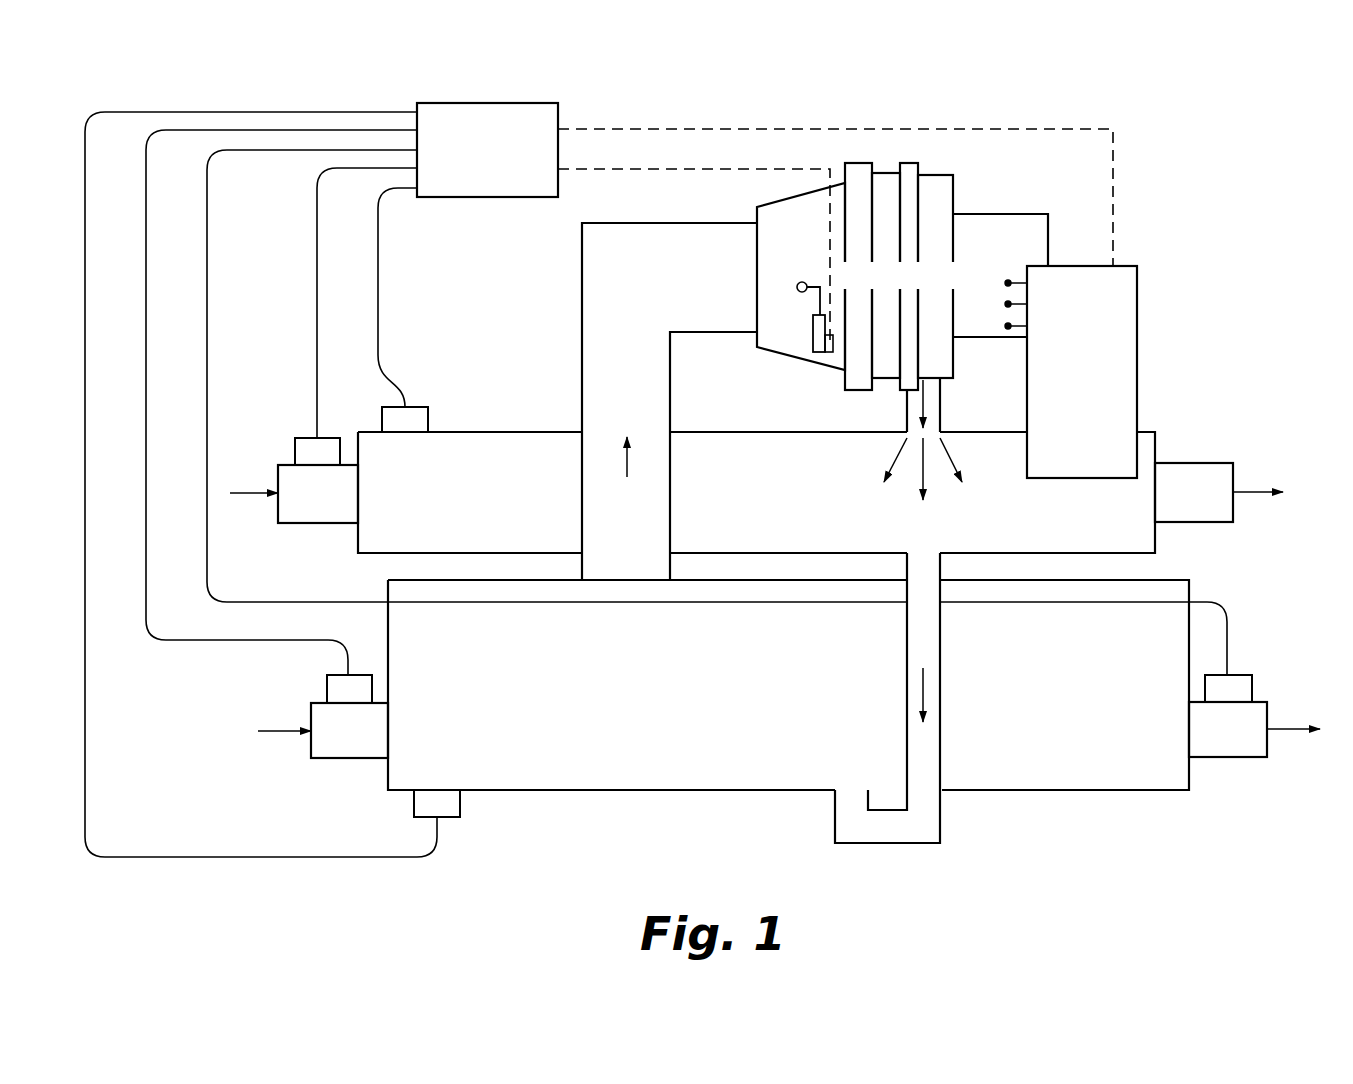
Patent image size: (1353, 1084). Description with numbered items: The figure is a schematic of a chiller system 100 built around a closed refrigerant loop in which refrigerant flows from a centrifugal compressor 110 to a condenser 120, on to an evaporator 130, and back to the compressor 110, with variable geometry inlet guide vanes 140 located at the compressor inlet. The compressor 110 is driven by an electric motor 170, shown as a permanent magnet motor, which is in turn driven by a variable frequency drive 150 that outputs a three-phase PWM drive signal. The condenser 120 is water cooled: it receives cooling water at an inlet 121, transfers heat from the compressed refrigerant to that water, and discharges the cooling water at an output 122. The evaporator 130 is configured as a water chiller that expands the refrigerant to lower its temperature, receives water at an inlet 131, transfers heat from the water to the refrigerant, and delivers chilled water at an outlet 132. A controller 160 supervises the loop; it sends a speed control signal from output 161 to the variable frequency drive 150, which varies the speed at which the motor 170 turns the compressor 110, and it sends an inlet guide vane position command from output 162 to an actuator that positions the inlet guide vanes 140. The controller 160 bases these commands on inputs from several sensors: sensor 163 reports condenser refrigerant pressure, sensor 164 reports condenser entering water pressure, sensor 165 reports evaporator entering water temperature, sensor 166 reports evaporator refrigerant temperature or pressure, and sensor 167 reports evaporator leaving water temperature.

The chiller system 100 is at (1180, 122).
The centrifugal compressor 110 is at (953, 183).
The condenser 120 is at (775, 432).
The inlet 121 is at (302, 523).
The output 122 is at (1198, 463).
The evaporator 130 is at (637, 790).
The inlet 131 is at (342, 758).
The outlet 132 is at (1230, 757).
The variable geometry inlet guide vanes 140 is at (810, 331).
The variable frequency drive 150 is at (1137, 310).
The controller 160 is at (445, 103).
The output 161 is at (558, 129).
The output 162 is at (558, 172).
The sensor 163 is at (428, 412).
The sensor 164 is at (302, 438).
The sensor 165 is at (327, 688).
The sensor 166 is at (450, 817).
The sensor 167 is at (1252, 683).
The electric motor 170 is at (1040, 215).